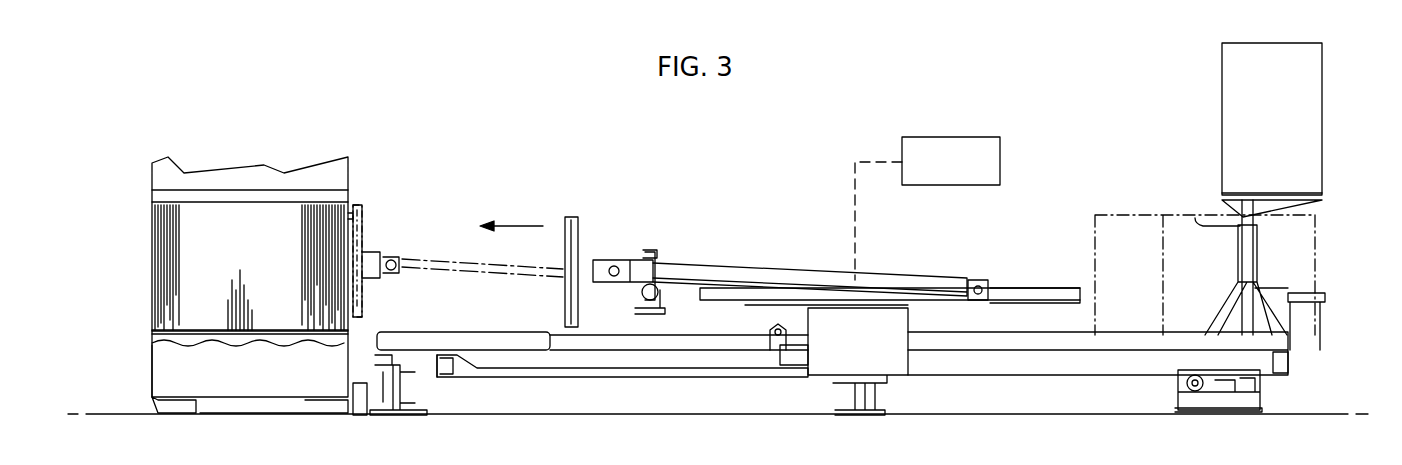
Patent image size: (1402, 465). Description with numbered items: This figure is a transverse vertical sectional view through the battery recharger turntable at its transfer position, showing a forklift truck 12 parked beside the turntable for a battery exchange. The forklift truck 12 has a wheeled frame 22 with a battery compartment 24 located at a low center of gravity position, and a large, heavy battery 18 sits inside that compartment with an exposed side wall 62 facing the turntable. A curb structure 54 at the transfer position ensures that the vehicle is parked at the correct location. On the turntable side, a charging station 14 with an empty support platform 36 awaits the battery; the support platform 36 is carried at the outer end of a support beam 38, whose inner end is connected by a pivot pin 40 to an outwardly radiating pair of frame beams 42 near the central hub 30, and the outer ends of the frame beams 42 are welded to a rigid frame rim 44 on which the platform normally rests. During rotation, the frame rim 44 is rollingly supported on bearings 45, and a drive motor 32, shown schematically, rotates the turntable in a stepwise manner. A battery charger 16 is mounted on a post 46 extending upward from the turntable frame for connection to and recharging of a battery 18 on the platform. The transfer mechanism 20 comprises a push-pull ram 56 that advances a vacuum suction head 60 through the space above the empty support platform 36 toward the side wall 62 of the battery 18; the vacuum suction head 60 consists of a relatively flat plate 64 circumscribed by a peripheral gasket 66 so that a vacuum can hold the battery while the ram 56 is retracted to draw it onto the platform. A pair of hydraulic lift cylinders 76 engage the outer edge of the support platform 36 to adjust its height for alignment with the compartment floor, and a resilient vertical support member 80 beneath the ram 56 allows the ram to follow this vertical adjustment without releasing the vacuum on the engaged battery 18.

The forklift truck 12 is at (228, 140).
The charging station 14 is at (498, 133).
The battery charger 16 is at (1310, 98).
The battery 18 is at (178, 231).
The transfer mechanism 20 is at (729, 176).
The wheeled frame 22 is at (178, 378).
The battery compartment 24 is at (190, 327).
The central hub 30 is at (885, 333).
The drive motor 32 is at (1000, 160).
The support platform 36 is at (440, 334).
The support beam 38 is at (625, 358).
The pivot pin 40 is at (772, 330).
The frame beams 42 is at (682, 342).
The frame rim 44 is at (485, 378).
The bearings 45 is at (1205, 403).
The post 46 is at (1196, 218).
The curb structure 54 is at (355, 412).
The push-pull ram 56 is at (750, 274).
The vacuum suction head 60 is at (578, 215).
The side wall 62 is at (362, 213).
The flat plate 64 is at (596, 240).
The peripheral gasket 66 is at (560, 298).
The hydraulic lift cylinders 76 is at (385, 409).
The resilient vertical support member 80 is at (640, 300).